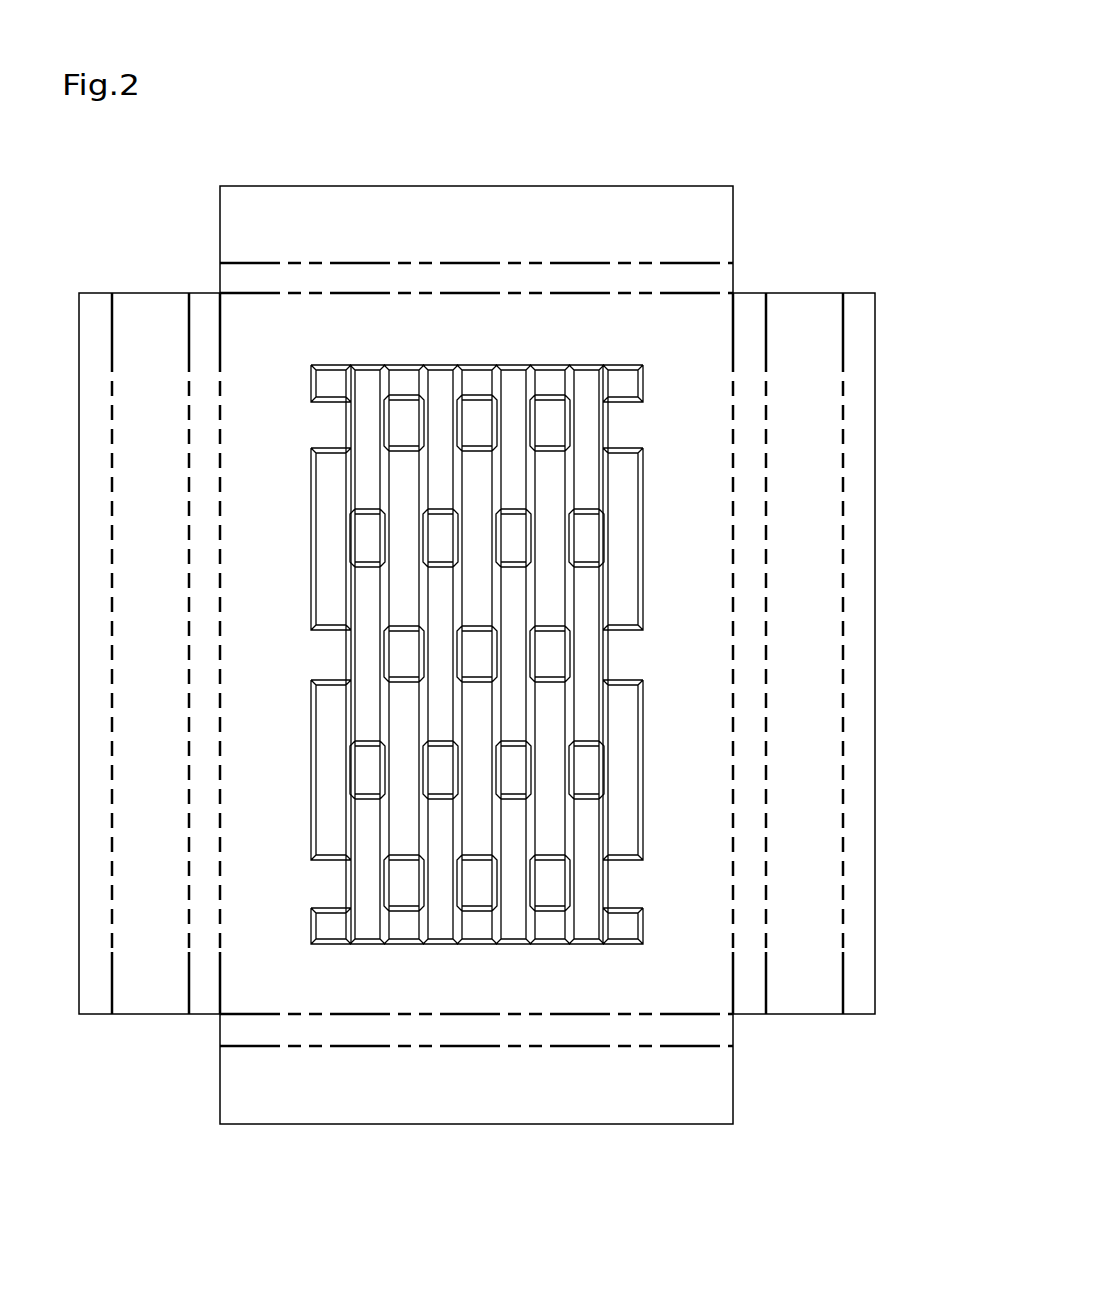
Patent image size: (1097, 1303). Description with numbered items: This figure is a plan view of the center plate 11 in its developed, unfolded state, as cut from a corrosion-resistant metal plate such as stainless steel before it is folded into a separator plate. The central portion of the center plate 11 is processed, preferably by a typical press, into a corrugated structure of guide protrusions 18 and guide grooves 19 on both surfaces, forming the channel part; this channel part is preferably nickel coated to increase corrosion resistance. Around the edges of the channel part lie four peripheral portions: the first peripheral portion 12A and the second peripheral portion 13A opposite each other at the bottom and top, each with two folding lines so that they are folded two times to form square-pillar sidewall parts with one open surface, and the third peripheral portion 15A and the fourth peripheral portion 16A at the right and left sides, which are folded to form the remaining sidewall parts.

The center plate 11 is at (702, 605).
The first peripheral portion 12A is at (362, 1105).
The second peripheral portion 13A is at (507, 198).
The third peripheral portion 15A is at (816, 993).
The fourth peripheral portion 16A is at (145, 997).
The guide protrusions 18 is at (622, 751).
The guide grooves 19 is at (585, 838).